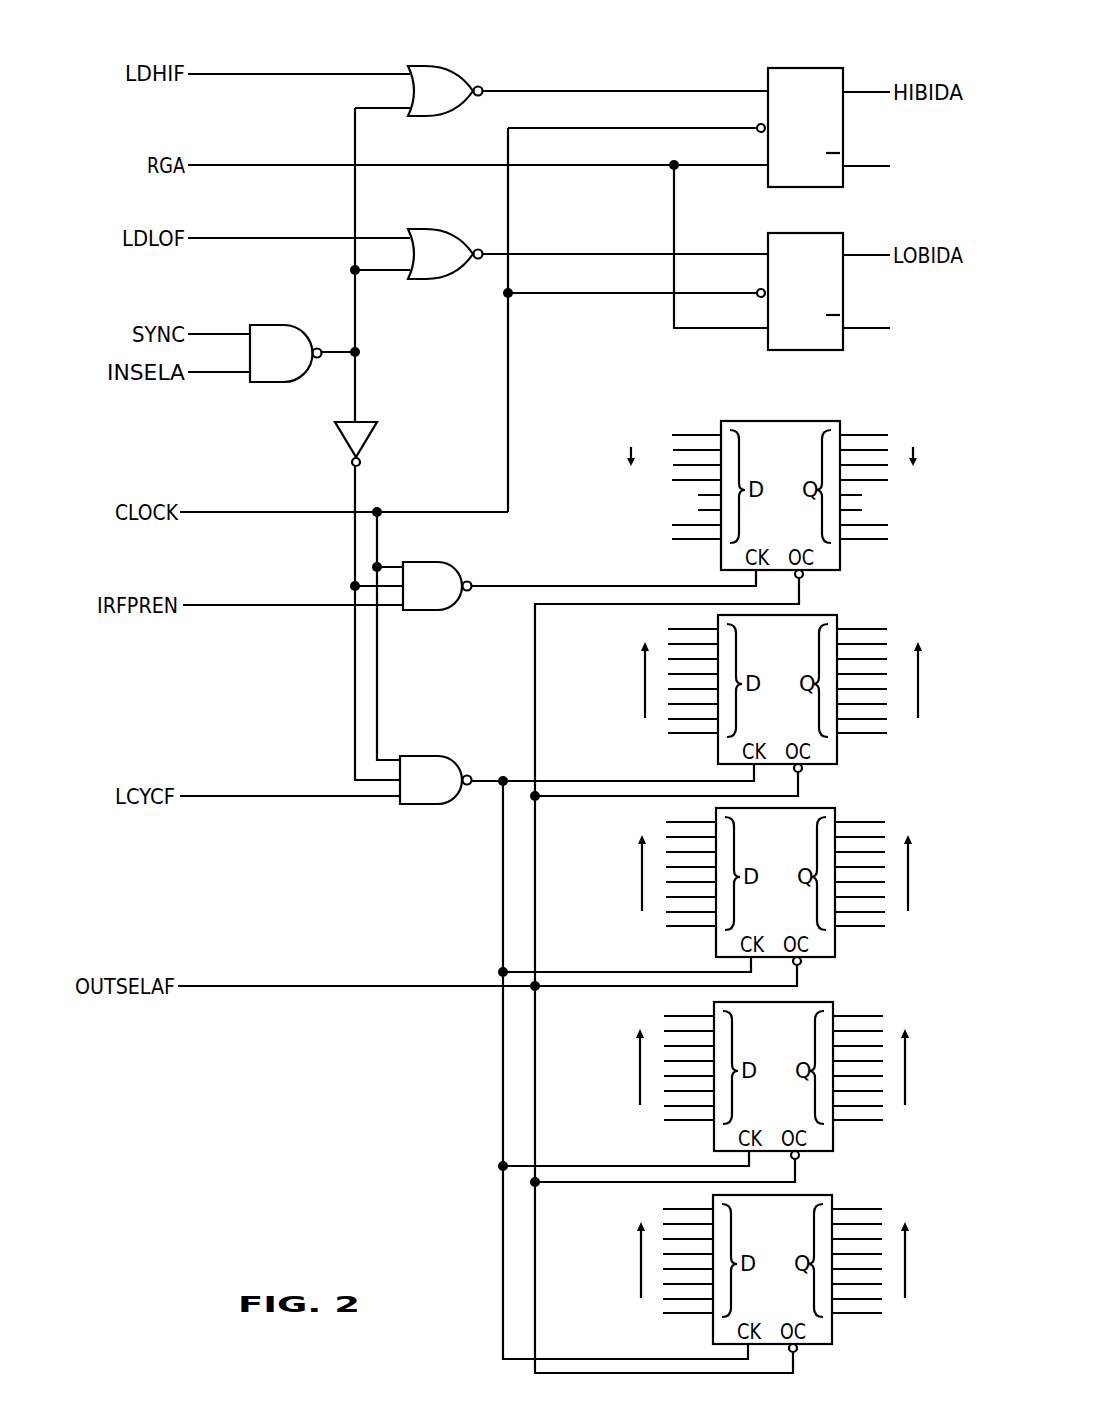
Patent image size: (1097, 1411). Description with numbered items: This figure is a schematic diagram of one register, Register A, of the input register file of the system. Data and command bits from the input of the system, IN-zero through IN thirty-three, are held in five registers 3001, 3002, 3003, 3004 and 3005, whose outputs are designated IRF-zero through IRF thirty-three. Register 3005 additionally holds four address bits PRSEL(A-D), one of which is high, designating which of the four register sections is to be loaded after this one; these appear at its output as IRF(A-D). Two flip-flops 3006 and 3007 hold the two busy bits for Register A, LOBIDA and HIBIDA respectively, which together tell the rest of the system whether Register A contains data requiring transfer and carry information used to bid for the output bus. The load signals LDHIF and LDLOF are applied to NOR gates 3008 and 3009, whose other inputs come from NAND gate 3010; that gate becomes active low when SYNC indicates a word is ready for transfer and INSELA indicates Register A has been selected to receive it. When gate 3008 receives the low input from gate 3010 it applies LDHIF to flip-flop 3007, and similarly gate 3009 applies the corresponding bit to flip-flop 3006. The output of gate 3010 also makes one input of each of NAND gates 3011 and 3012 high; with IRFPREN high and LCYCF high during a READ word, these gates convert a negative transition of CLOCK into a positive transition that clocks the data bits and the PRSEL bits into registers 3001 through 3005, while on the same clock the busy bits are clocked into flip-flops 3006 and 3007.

The register 3001 is at (776, 1255).
The register 3002 is at (781, 1063).
The register 3003 is at (783, 869).
The register 3004 is at (784, 676).
The register 3005 is at (766, 481).
The flip-flop 3006 is at (832, 267).
The flip-flop 3007 is at (805, 100).
The NOR gate 3008 is at (446, 64).
The NOR gate 3009 is at (446, 231).
The NAND gate 3010 is at (286, 326).
The NAND gate 3011 is at (438, 613).
The NAND gate 3012 is at (436, 753).